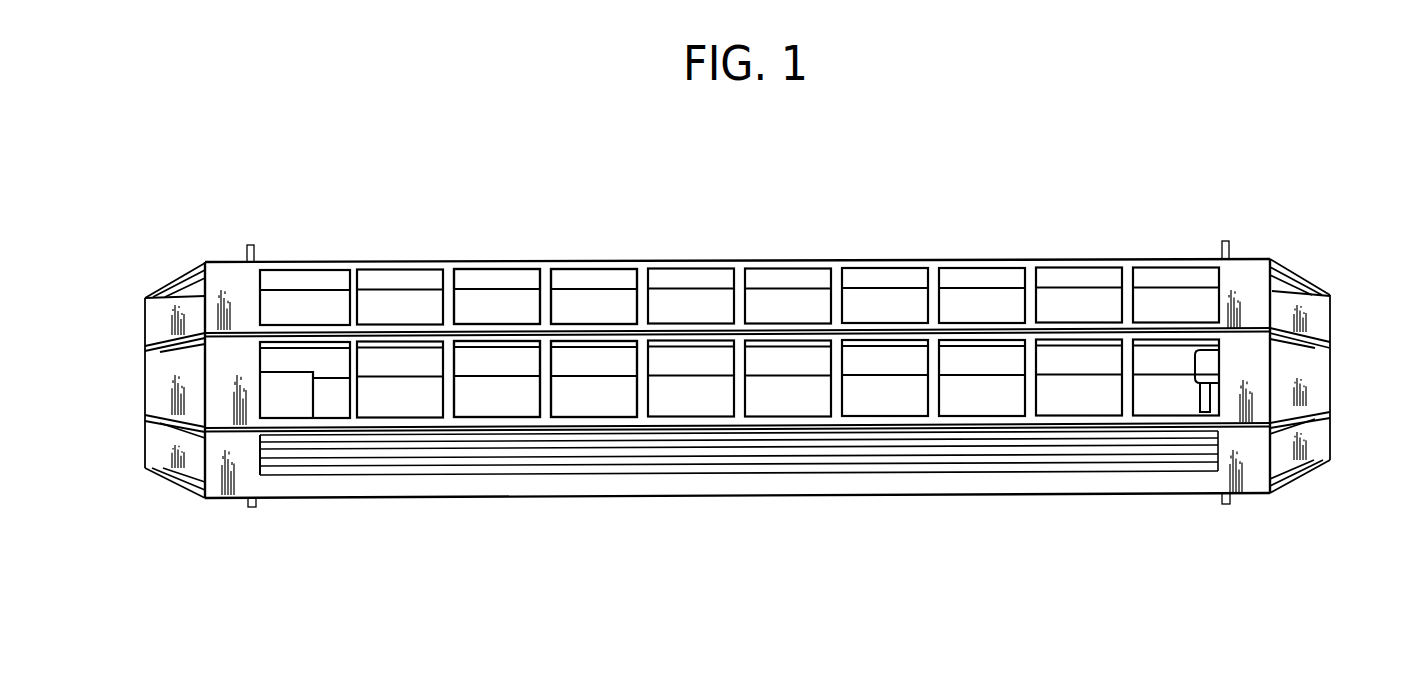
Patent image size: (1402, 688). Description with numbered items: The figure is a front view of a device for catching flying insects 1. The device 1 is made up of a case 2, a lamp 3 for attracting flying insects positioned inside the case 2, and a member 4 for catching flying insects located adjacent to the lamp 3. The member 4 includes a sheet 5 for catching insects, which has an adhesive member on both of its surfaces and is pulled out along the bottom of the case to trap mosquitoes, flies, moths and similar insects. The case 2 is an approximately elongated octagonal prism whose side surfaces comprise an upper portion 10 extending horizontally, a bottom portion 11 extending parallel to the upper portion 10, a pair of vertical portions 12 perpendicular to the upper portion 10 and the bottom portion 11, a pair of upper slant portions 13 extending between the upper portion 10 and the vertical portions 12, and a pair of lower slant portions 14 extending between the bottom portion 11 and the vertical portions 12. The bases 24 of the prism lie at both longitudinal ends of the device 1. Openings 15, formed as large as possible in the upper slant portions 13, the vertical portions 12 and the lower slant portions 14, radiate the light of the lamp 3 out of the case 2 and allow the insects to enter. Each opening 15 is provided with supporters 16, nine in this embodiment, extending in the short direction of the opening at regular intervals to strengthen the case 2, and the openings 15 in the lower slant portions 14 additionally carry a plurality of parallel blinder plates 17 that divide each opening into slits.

The device for catching flying insects 1 is at (1164, 236).
The case 2 is at (692, 256).
The lamp 3 is at (504, 305).
The member for catching flying insects 4 is at (132, 360).
The sheet for catching insects 5 is at (590, 395).
The upper portion 10 is at (1013, 259).
The bottom portion 11 is at (1048, 495).
The vertical portions 12 is at (1255, 372).
The upper slant portions 13 is at (1250, 300).
The lower slant portions 14 is at (1249, 490).
The openings 15 is at (918, 276).
The supporter 16 is at (359, 285).
The blinder plates 17 is at (993, 470).
The bases 24 is at (191, 262).